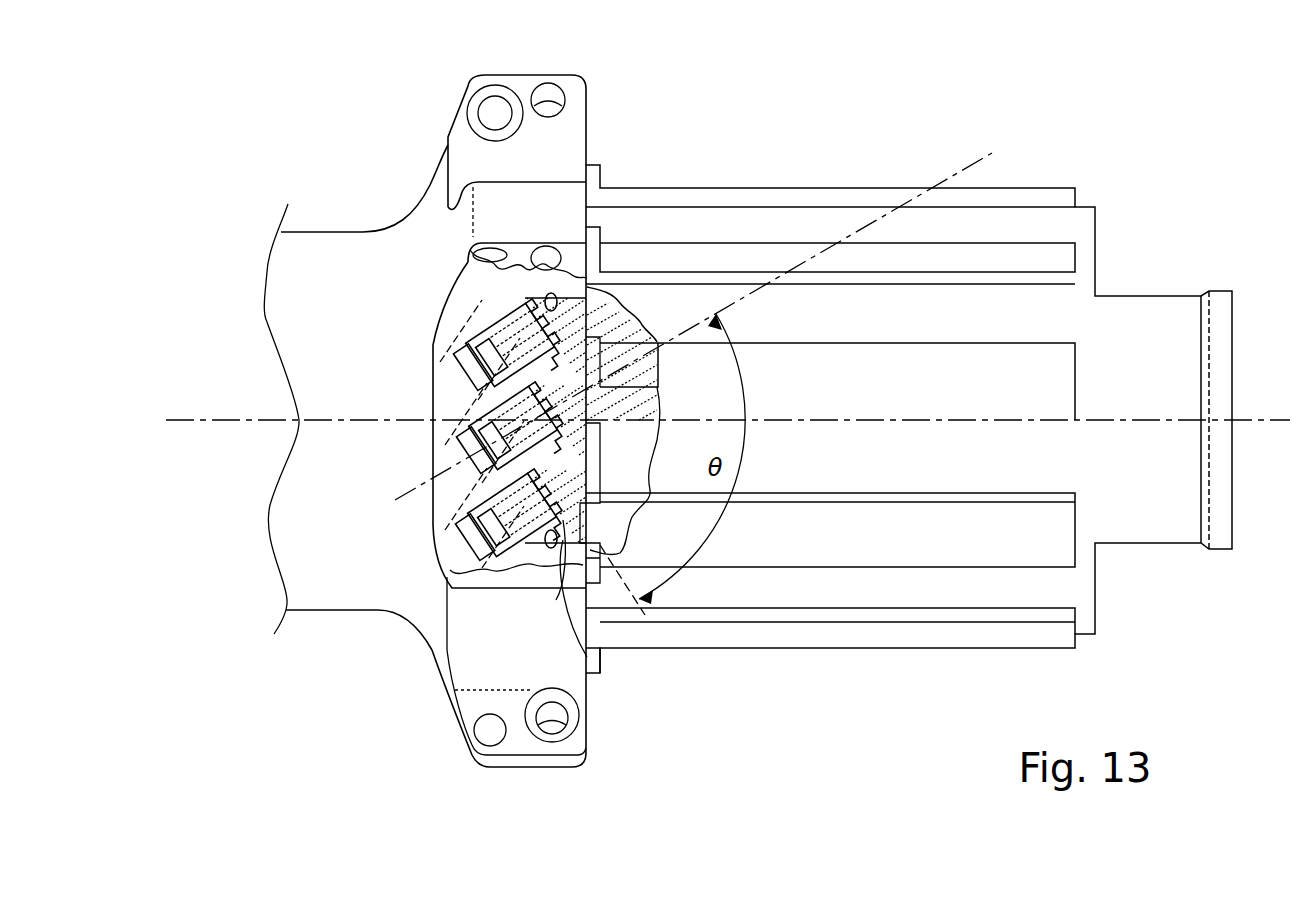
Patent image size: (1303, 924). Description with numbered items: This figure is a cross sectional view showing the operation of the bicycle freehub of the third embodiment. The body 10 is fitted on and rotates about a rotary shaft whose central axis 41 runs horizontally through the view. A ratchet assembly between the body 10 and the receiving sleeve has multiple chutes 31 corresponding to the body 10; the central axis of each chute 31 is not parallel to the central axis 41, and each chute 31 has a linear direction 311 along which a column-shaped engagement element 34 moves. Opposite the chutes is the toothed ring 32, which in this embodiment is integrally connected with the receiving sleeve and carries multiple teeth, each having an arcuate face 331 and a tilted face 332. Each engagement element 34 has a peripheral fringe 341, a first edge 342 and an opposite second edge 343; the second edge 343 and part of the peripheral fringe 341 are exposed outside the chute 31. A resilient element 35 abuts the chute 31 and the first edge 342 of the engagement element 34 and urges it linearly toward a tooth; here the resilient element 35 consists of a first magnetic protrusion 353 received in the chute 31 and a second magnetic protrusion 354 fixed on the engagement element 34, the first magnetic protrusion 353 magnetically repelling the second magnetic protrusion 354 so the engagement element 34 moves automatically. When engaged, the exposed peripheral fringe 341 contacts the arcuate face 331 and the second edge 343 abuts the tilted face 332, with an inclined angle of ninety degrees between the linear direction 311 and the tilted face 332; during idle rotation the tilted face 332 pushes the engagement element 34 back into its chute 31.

The body 10 is at (296, 224).
The chute 31 is at (483, 345).
The toothed ring 32 is at (549, 292).
The linear direction 311 is at (968, 166).
The engagement element 34 is at (515, 405).
The peripheral fringe 341 is at (600, 668).
The first edge 342 is at (450, 508).
The second edge 343 is at (593, 438).
The arcuate face 331 is at (650, 342).
The tilted face 332 is at (675, 678).
The resilient element 35 is at (365, 330).
The first magnetic protrusion 353 is at (445, 362).
The second magnetic protrusion 354 is at (453, 360).
The central axis 41 is at (262, 419).